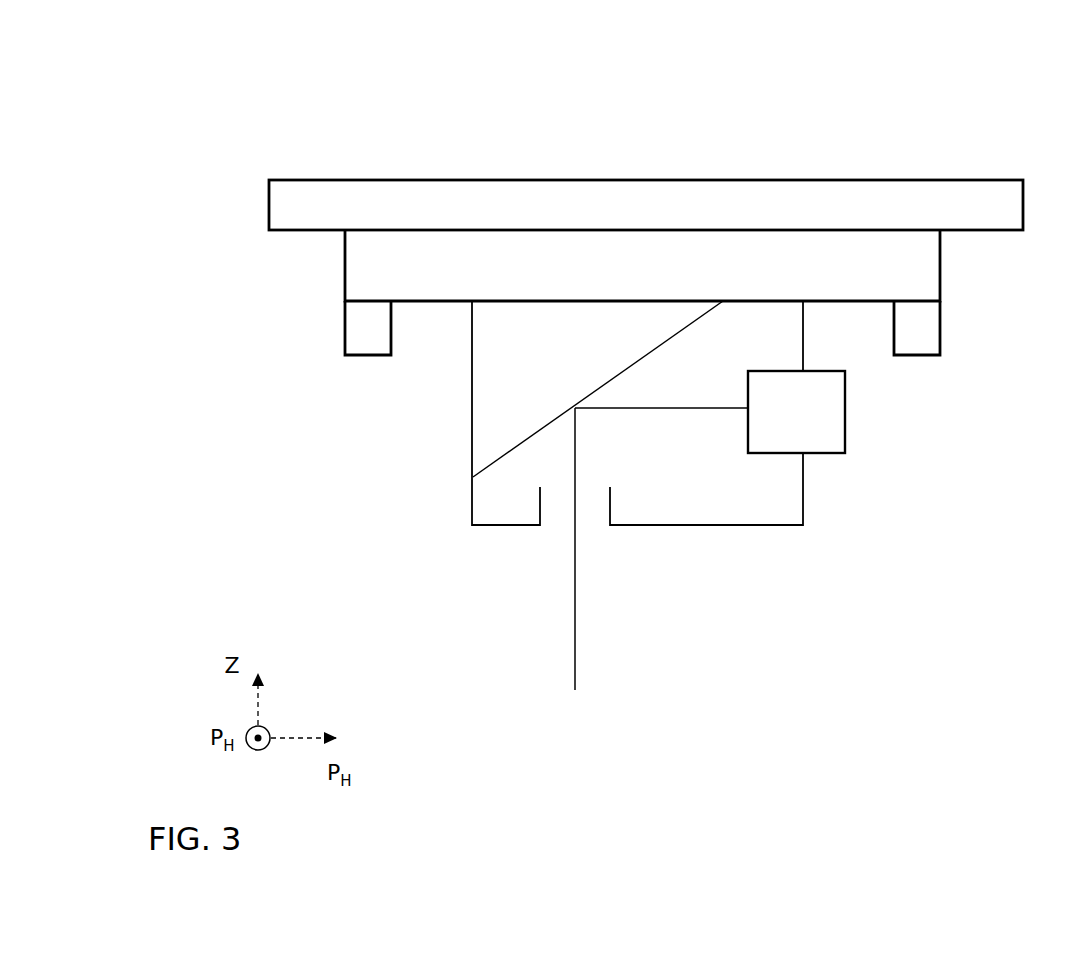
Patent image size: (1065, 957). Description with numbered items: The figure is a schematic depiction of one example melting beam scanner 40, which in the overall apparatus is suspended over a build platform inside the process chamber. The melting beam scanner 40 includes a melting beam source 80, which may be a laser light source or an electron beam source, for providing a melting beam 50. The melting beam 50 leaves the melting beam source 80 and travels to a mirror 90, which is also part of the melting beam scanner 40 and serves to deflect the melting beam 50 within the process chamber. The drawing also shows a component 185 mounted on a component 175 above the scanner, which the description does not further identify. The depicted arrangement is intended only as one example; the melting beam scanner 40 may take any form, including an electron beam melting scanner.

The substrate / wafer 185 is at (895, 198).
The substrate holder / stage 175 is at (630, 276).
The melting beam scanner 40 is at (845, 543).
The mirror 90 is at (574, 391).
The melting beam source 80 is at (793, 428).
The melting beam 50 is at (665, 422).